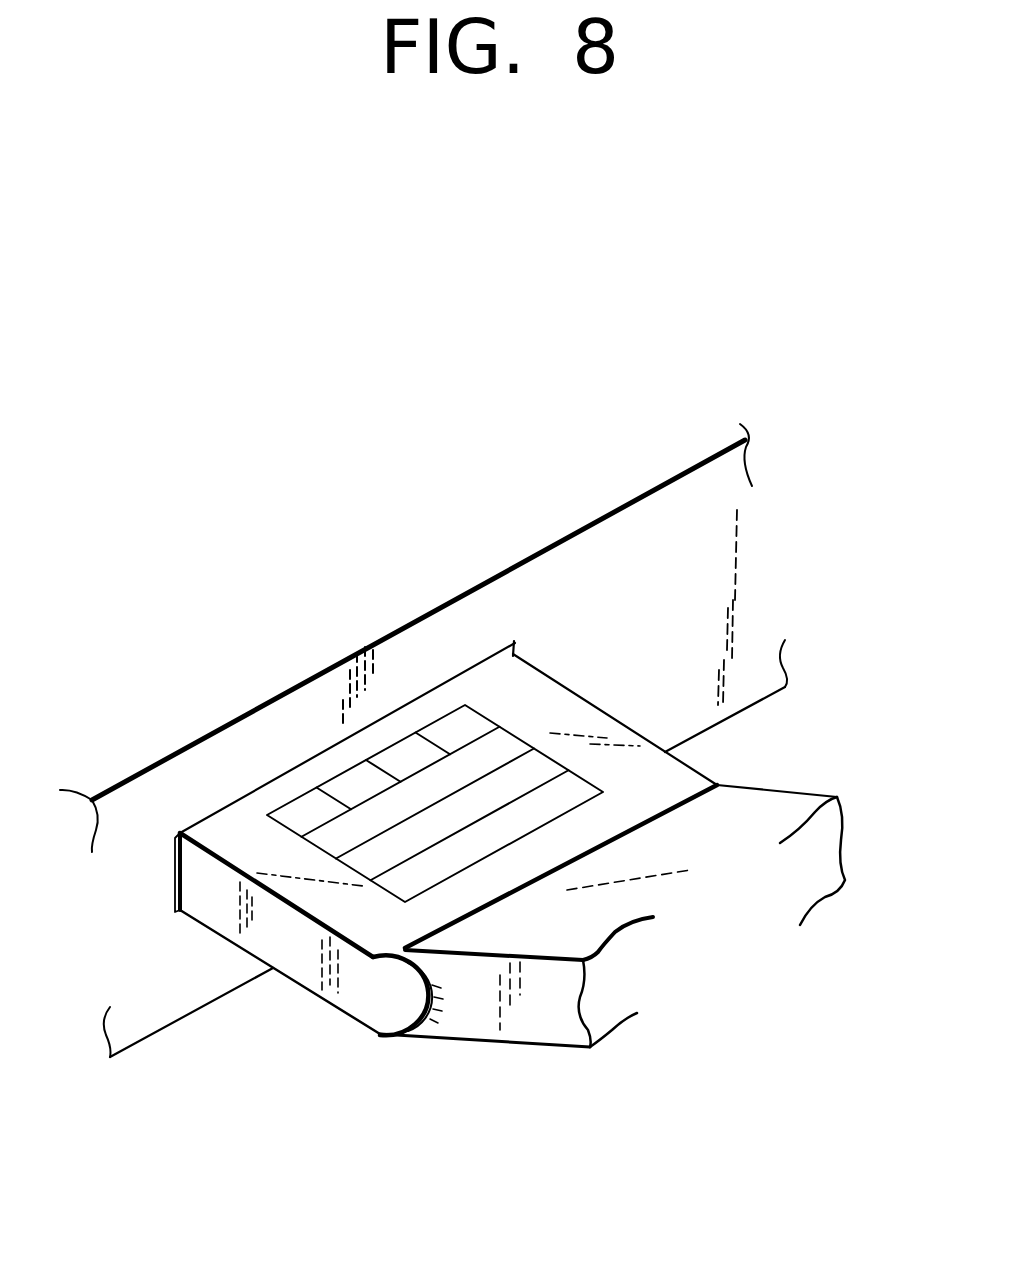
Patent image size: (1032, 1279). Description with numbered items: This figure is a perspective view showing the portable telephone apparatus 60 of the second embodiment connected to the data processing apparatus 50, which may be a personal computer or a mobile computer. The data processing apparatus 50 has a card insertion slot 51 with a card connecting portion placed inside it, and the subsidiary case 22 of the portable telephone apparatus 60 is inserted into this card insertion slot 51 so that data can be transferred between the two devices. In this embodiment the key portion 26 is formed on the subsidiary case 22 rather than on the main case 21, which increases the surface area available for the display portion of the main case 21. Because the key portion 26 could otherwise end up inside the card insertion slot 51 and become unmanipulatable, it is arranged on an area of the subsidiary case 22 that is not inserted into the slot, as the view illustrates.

The data processing apparatus 50 is at (761, 440).
The card insertion slot 51 is at (260, 787).
The key portion 26 is at (512, 747).
The portable telephone apparatus 60 is at (773, 787).
The subsidiary case 22 is at (307, 950).
The main case 21 is at (532, 1012).